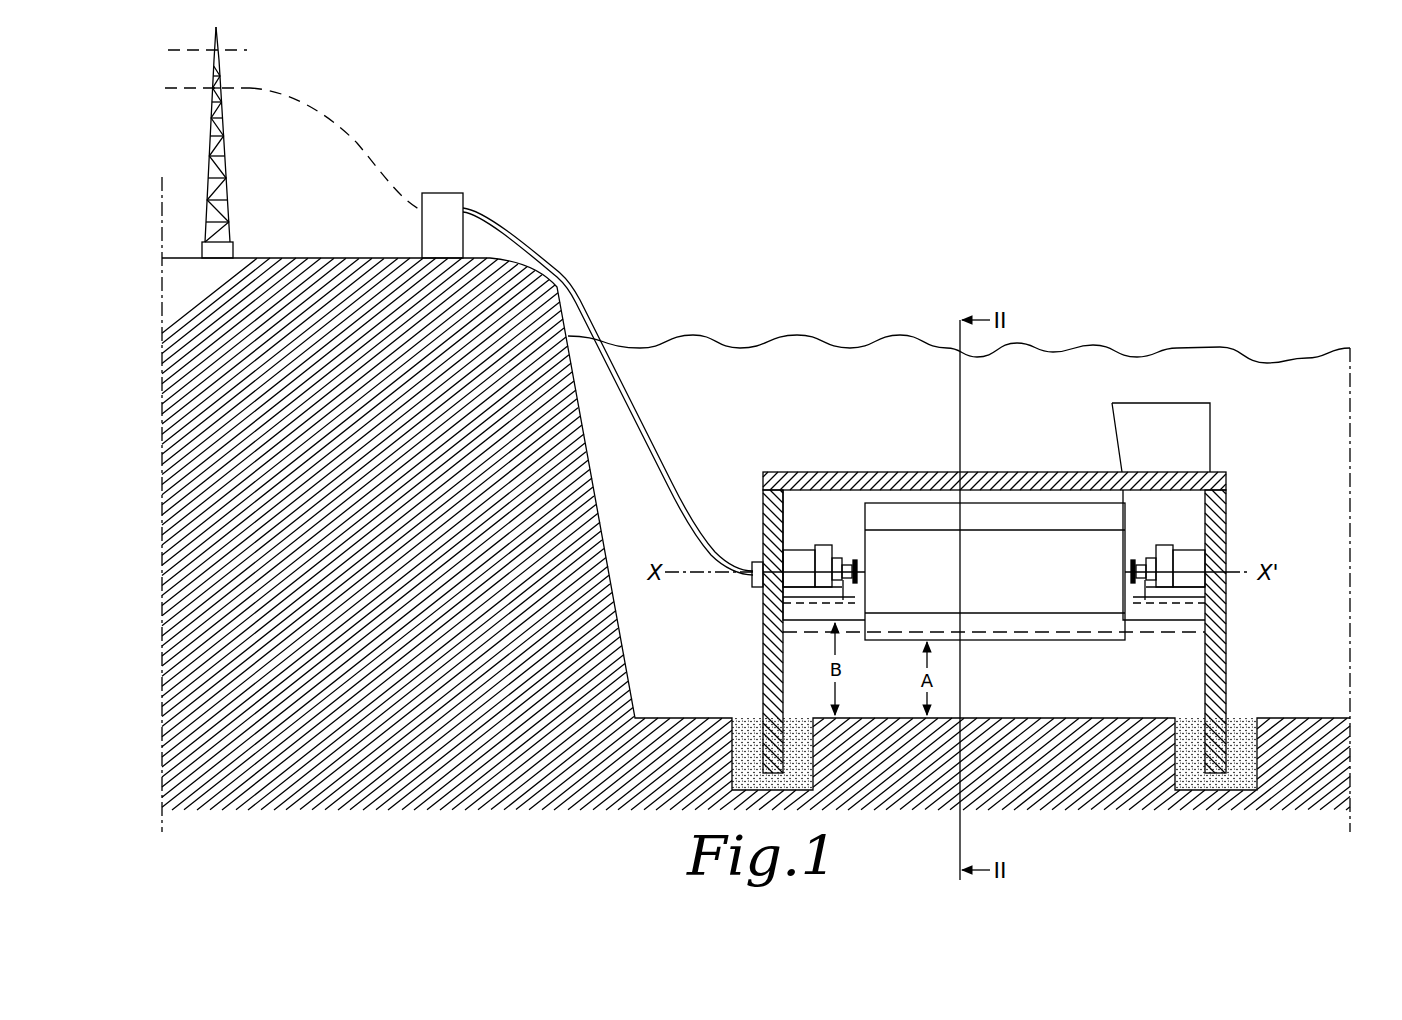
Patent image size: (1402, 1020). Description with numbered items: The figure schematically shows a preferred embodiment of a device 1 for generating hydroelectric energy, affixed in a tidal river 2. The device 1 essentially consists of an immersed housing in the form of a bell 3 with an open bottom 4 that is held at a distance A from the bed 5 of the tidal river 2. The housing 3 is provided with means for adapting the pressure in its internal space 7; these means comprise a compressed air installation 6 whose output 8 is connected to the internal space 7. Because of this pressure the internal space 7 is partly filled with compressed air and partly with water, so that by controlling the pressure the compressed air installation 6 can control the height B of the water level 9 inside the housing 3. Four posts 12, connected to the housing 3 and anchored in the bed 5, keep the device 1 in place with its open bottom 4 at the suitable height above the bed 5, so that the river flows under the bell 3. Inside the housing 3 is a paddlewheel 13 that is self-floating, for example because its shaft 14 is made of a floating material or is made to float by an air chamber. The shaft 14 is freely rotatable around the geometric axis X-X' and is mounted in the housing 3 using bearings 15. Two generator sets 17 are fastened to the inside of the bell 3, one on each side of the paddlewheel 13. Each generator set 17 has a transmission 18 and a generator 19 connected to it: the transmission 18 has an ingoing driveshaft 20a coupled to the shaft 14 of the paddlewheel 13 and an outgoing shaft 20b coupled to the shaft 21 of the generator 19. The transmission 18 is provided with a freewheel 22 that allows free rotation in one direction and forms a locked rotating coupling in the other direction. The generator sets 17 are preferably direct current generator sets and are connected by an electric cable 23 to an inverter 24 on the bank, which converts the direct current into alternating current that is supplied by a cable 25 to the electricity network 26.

The device 1 is at (1340, 272).
The tidal river 2 is at (1322, 576).
The housing 3 is at (848, 565).
The open bottom 4 is at (1032, 623).
The bed 5 is at (630, 755).
The compressed air installation 6 is at (1165, 430).
The internal space 7 is at (850, 505).
The output 8 is at (1160, 545).
The water level 9 is at (1195, 614).
The posts 12 is at (772, 690).
The paddlewheel 13 is at (1022, 548).
The shaft 14 is at (1106, 488).
The bearings 15 is at (850, 590).
The generator sets 17 is at (810, 547).
The transmission 18 is at (843, 560).
The generator 19 is at (795, 550).
The ingoing driveshaft 20a is at (855, 562).
The outgoing shaft 20b is at (832, 563).
The shaft 21 is at (820, 558).
The freewheel 22 is at (842, 590).
The electric cable 23 is at (572, 297).
The inverter 24 is at (444, 193).
The cable 25 is at (363, 150).
The electricity network 26 is at (247, 50).